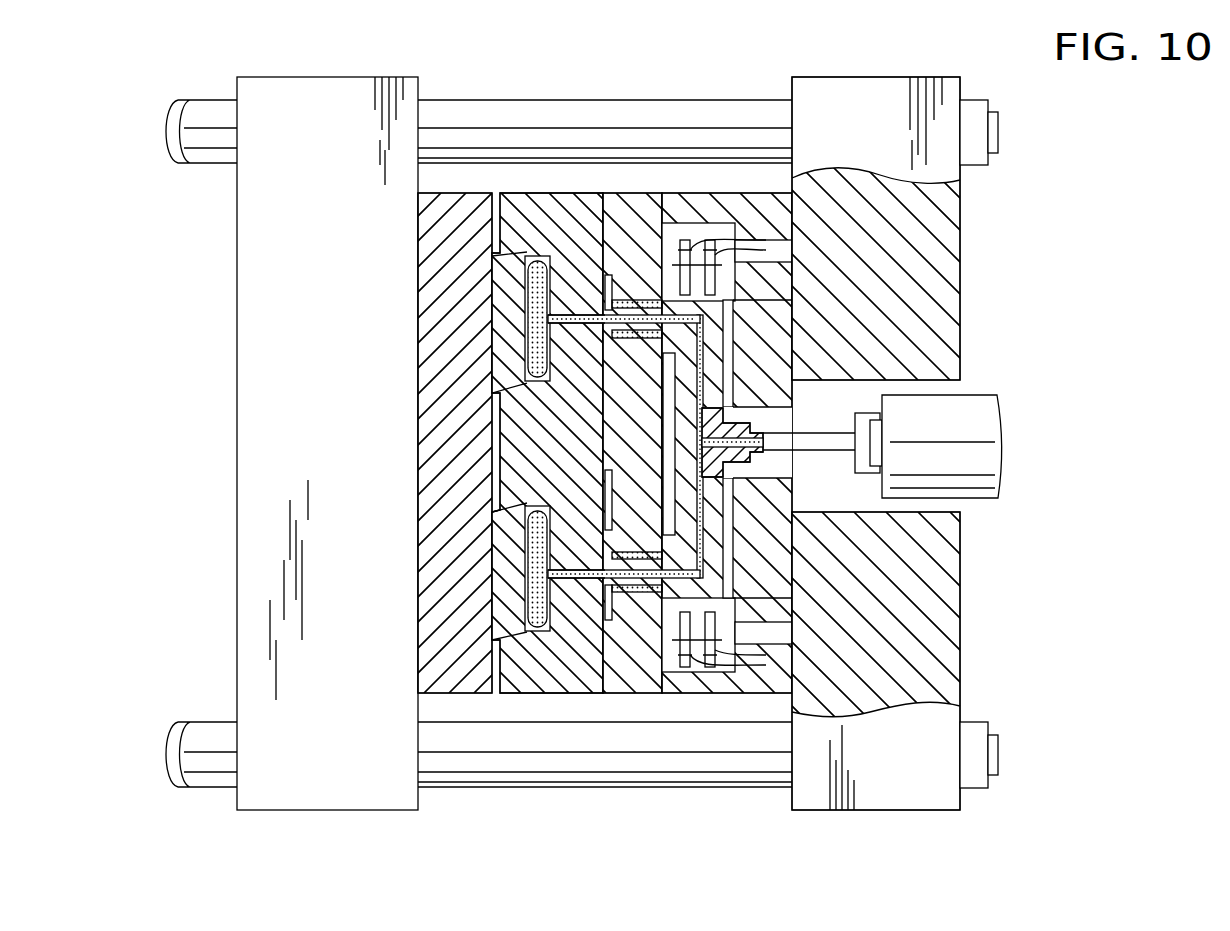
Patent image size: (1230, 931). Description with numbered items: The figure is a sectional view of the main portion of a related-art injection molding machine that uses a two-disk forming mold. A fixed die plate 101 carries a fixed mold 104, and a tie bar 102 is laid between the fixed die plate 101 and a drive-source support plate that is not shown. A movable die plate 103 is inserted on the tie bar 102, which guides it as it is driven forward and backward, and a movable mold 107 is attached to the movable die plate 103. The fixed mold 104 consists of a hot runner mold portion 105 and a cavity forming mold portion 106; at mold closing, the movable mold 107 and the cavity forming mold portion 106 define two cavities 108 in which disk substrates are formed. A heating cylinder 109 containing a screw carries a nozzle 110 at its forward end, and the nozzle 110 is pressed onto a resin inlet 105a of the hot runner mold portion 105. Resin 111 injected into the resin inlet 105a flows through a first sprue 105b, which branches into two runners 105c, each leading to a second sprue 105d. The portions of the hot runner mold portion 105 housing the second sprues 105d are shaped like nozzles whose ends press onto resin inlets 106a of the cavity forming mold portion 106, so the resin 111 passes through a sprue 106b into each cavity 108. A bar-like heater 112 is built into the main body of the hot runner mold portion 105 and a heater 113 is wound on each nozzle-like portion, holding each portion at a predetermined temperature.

The fixed die plate 101 is at (858, 77).
The tie bar 102 is at (213, 97).
The movable die plate 103 is at (328, 77).
The fixed mold 104 is at (628, 193).
The hot runner mold portion 105 is at (702, 318).
The resin inlet 105a is at (702, 553).
The first sprue 105b is at (770, 412).
The runner 105c is at (660, 368).
The second sprue 105d is at (720, 298).
The cavity forming mold portion 106 is at (565, 193).
The resin inlet 106a is at (578, 582).
The sprue 106b is at (586, 580).
The movable mold 107 is at (455, 193).
The cavity 108 is at (540, 258).
The heating cylinder 109 is at (995, 462).
The nozzle 110 is at (835, 455).
The resin 111 is at (535, 575).
The bar-like heater 112 is at (680, 600).
The heater 113 is at (632, 590).